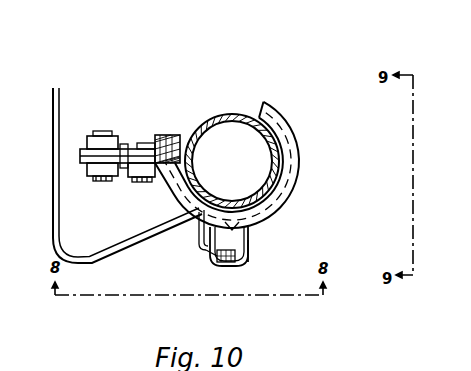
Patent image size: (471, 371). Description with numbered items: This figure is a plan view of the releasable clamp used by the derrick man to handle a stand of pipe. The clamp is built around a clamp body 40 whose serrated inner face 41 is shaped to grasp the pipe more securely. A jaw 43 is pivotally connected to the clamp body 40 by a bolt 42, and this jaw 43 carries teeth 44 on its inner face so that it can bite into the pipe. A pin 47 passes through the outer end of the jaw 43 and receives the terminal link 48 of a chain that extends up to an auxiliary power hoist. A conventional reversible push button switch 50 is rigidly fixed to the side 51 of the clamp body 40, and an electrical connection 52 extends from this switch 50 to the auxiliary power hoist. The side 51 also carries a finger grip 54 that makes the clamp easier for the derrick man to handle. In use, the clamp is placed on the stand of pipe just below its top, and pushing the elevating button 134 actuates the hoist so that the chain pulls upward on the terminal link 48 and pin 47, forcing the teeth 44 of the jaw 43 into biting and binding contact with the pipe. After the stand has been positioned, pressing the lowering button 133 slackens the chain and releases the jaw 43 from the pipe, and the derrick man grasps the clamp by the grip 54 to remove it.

The clamp body 40 is at (286, 194).
The serrated inner face 41 is at (261, 117).
The bolt 42 is at (146, 182).
The jaw 43 is at (125, 146).
The teeth 44 is at (167, 135).
The pin 47 is at (99, 181).
The terminal link 48 is at (97, 136).
The reversible push button switch 50 is at (229, 264).
The side 51 is at (252, 226).
The electrical connection 52 is at (140, 246).
The finger grip 54 is at (248, 258).
The lowering button 133 is at (207, 250).
The elevating button 134 is at (217, 256).